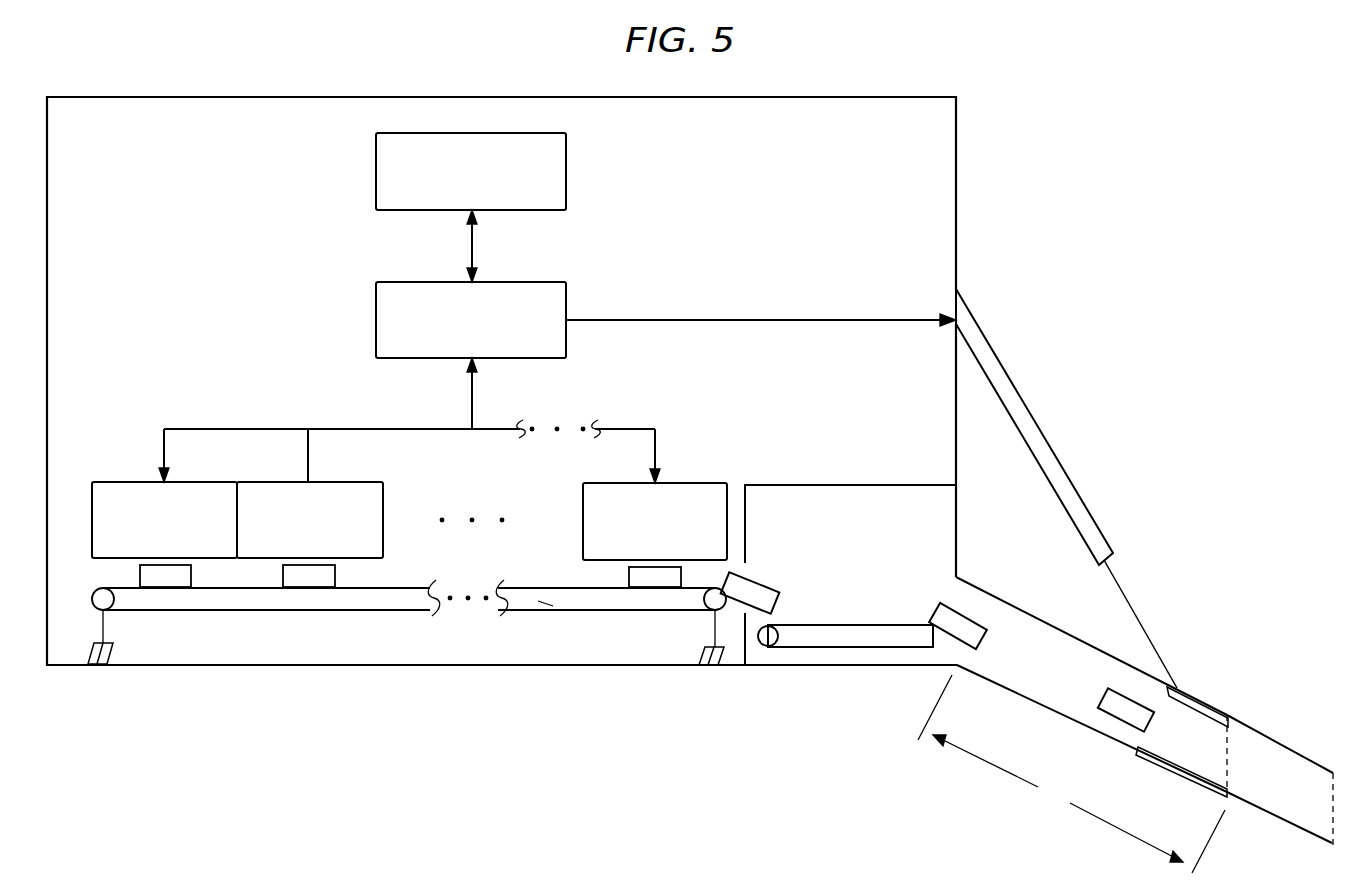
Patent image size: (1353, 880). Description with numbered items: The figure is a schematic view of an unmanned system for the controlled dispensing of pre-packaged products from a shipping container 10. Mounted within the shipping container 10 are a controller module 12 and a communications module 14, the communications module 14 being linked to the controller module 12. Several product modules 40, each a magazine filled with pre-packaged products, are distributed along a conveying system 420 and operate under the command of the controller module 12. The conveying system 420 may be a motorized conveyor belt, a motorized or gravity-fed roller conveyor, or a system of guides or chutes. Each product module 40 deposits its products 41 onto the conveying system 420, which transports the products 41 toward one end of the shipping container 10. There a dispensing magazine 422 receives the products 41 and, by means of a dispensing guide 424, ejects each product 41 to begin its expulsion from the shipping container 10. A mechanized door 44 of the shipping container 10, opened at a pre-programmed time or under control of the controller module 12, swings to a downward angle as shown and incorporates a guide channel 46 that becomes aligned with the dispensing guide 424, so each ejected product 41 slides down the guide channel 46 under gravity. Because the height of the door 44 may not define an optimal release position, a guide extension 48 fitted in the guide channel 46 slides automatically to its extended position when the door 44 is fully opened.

The shipping container 10 is at (959, 150).
The controller module 12 is at (375, 310).
The communications module 14 is at (567, 163).
The product module 40 is at (115, 482).
The product 41 is at (140, 577).
The conveying system 420 is at (112, 603).
The dispensing magazine 422 is at (836, 485).
The dispensing guide 424 is at (820, 648).
The door 44 is at (1173, 777).
The guide channel 46 is at (1042, 688).
The guide extension 48 is at (1257, 735).